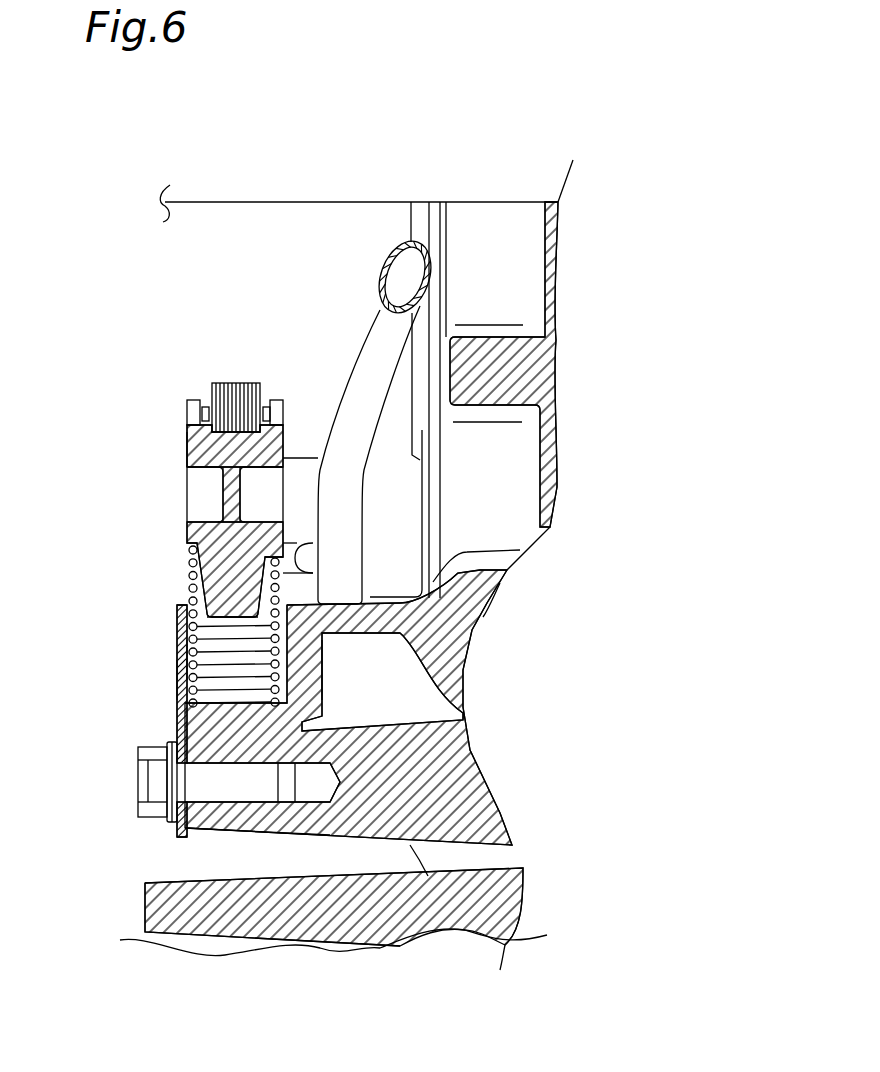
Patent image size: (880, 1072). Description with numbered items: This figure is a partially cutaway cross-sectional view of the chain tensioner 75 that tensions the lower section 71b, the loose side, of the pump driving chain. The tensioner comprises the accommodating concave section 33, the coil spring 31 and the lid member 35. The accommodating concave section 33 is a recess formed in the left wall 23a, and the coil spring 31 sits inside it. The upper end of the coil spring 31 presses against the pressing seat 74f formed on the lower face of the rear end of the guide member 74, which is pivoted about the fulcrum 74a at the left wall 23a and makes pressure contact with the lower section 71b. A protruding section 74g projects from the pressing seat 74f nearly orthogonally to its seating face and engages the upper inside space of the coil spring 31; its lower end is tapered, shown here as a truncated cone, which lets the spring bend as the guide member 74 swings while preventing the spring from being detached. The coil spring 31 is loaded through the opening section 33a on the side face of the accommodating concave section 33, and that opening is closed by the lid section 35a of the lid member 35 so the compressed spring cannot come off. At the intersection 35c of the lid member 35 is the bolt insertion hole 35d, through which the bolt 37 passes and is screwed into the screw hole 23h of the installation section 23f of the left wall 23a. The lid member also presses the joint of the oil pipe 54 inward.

The left wall 23a is at (360, 820).
The installation section 23f is at (225, 822).
The screw hole 23h is at (253, 810).
The coil spring 31 is at (273, 652).
The accommodating concave section 33 is at (322, 696).
The opening section 33a is at (187, 652).
The lid member 35 is at (170, 838).
The lid section 35a is at (177, 672).
The intersection 35c is at (177, 715).
The bolt insertion hole 35d is at (207, 808).
The bolt 37 is at (148, 782).
The oil pipe 54 is at (377, 335).
The lower section of the pump driving chain 71b is at (230, 383).
The guide member 74 is at (178, 376).
The fulcrum 74a is at (185, 455).
The pressing seat 74f is at (285, 555).
The protruding section 74g is at (222, 577).
The chain tensioner 75 is at (167, 658).